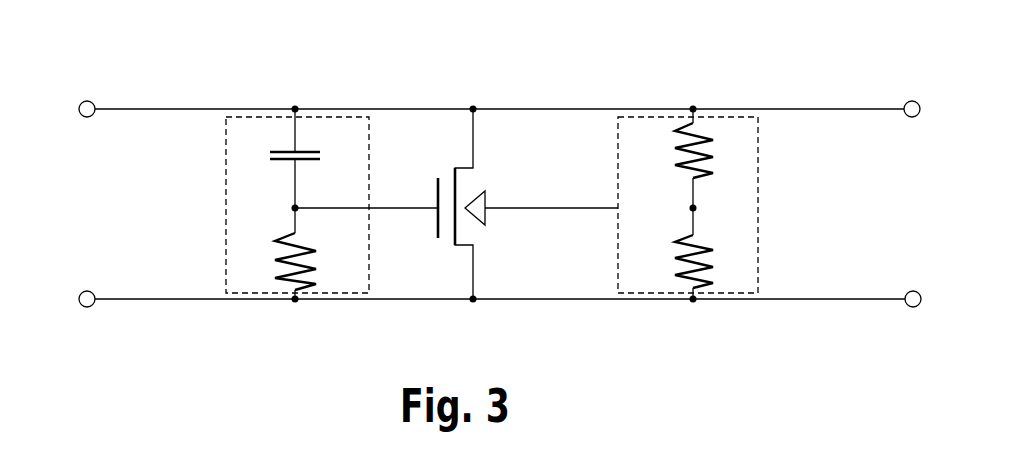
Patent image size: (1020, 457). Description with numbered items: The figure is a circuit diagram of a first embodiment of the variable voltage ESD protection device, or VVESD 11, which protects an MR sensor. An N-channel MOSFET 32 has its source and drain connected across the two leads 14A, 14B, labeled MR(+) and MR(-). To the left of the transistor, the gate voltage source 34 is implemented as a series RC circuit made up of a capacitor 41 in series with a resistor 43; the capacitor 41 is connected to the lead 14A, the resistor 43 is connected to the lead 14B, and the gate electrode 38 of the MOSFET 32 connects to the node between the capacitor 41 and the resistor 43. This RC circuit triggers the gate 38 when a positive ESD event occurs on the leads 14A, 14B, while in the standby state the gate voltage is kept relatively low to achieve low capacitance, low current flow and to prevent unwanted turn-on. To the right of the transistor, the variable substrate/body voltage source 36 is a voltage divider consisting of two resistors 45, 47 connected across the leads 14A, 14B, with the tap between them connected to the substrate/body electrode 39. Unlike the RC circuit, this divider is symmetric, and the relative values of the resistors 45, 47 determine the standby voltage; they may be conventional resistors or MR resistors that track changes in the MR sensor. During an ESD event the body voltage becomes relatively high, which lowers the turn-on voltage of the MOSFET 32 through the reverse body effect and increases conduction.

The VVESD 11 is at (270, 67).
The lead 14A is at (827, 102).
The lead 14B is at (838, 303).
The N-channel MOSFET 32 is at (478, 150).
The gate voltage source 34 is at (344, 133).
The substrate/body voltage source 36 is at (655, 125).
The gate electrode 38 is at (408, 213).
The substrate/body electrode 39 is at (530, 215).
The capacitor 41 is at (253, 152).
The resistor 43 is at (255, 247).
The resistor 45 is at (720, 153).
The resistor 47 is at (720, 259).